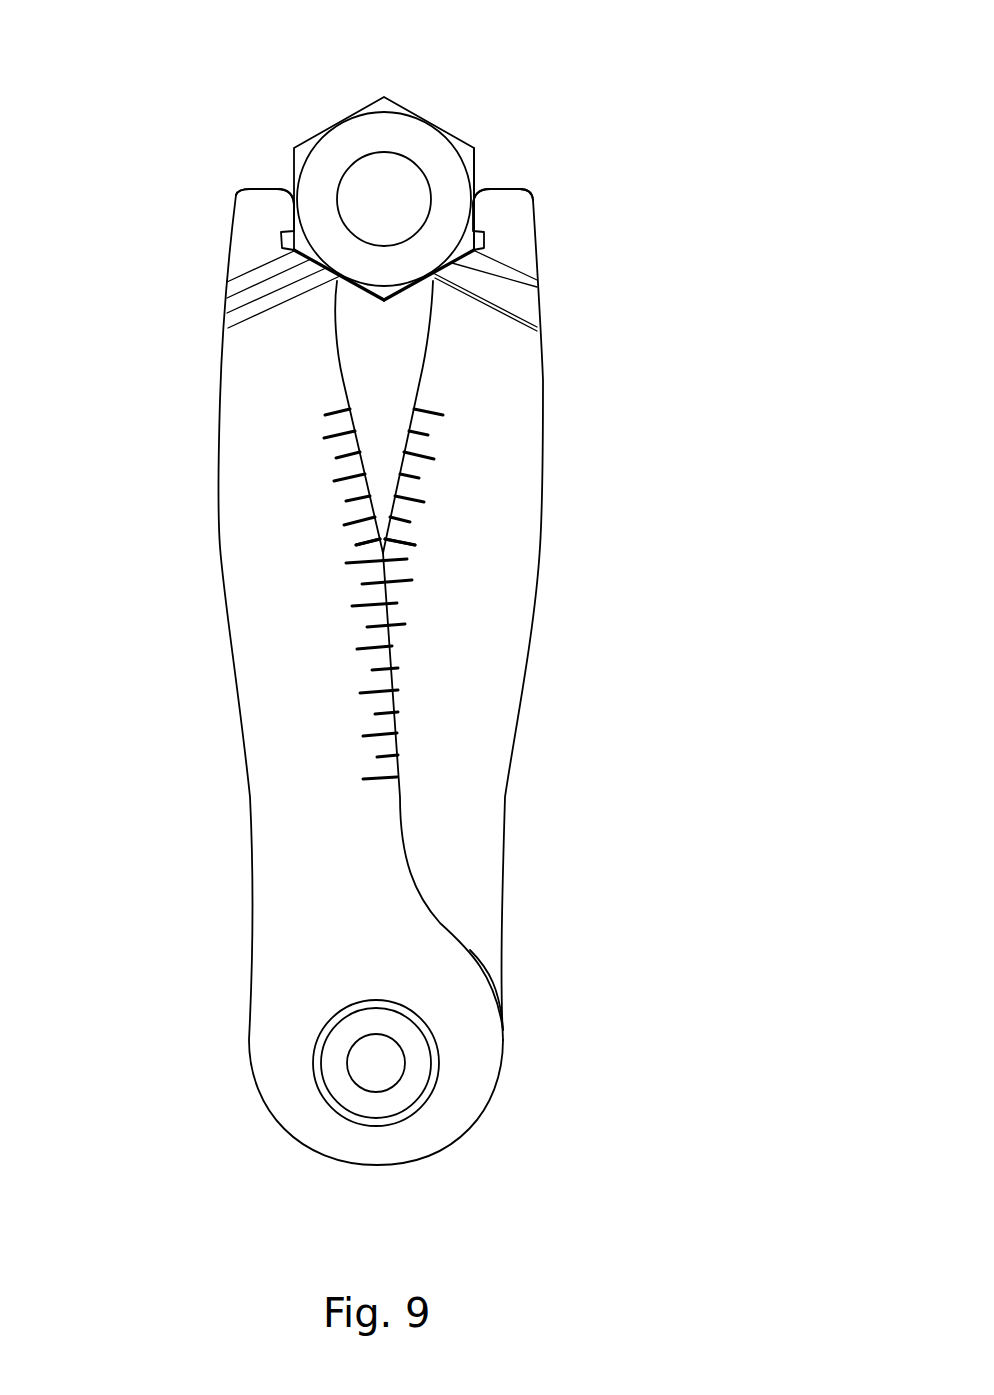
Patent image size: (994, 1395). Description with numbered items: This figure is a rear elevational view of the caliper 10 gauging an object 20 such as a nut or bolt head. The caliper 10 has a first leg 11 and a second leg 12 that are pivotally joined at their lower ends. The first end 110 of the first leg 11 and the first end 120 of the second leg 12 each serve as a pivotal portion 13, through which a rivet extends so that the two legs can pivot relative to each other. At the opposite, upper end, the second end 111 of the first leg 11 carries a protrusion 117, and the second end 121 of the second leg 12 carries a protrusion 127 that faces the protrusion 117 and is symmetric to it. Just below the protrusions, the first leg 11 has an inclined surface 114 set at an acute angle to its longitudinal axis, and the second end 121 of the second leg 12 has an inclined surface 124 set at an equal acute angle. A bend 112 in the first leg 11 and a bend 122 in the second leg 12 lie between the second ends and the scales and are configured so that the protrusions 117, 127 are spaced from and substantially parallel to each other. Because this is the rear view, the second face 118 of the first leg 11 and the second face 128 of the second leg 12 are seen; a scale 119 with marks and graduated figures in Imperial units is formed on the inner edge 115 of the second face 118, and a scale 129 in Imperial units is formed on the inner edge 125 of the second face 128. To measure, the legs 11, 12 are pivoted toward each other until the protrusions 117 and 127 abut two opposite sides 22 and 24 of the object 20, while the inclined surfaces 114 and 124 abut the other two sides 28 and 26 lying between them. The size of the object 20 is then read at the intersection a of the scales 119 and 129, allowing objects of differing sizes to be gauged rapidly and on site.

The caliper 10 is at (618, 942).
The first leg 11 is at (282, 815).
The second leg 12 is at (473, 815).
The pivotal portion 13 is at (388, 1083).
The object 20 is at (437, 170).
The side of object 22 is at (293, 178).
The side of object 24 is at (475, 173).
The side of object 26 is at (357, 293).
The side of object 28 is at (420, 285).
The first end of first leg 110 is at (288, 1095).
The second end of first leg 111 is at (260, 223).
The bend 112 is at (227, 302).
The inclined surface 114 is at (237, 263).
The inner edge 115 is at (347, 398).
The protrusion 117 is at (262, 188).
The second face of first leg 118 is at (260, 604).
The scale 119 is at (300, 526).
The first end of second leg 120 is at (493, 977).
The second end of second leg 121 is at (505, 225).
The bend 122 is at (503, 292).
The inclined surface 124 is at (483, 270).
The inner edge 125 is at (413, 393).
The protrusion 127 is at (482, 213).
The second face of second leg 128 is at (513, 578).
The scale 129 is at (478, 530).
The intersection a is at (387, 557).